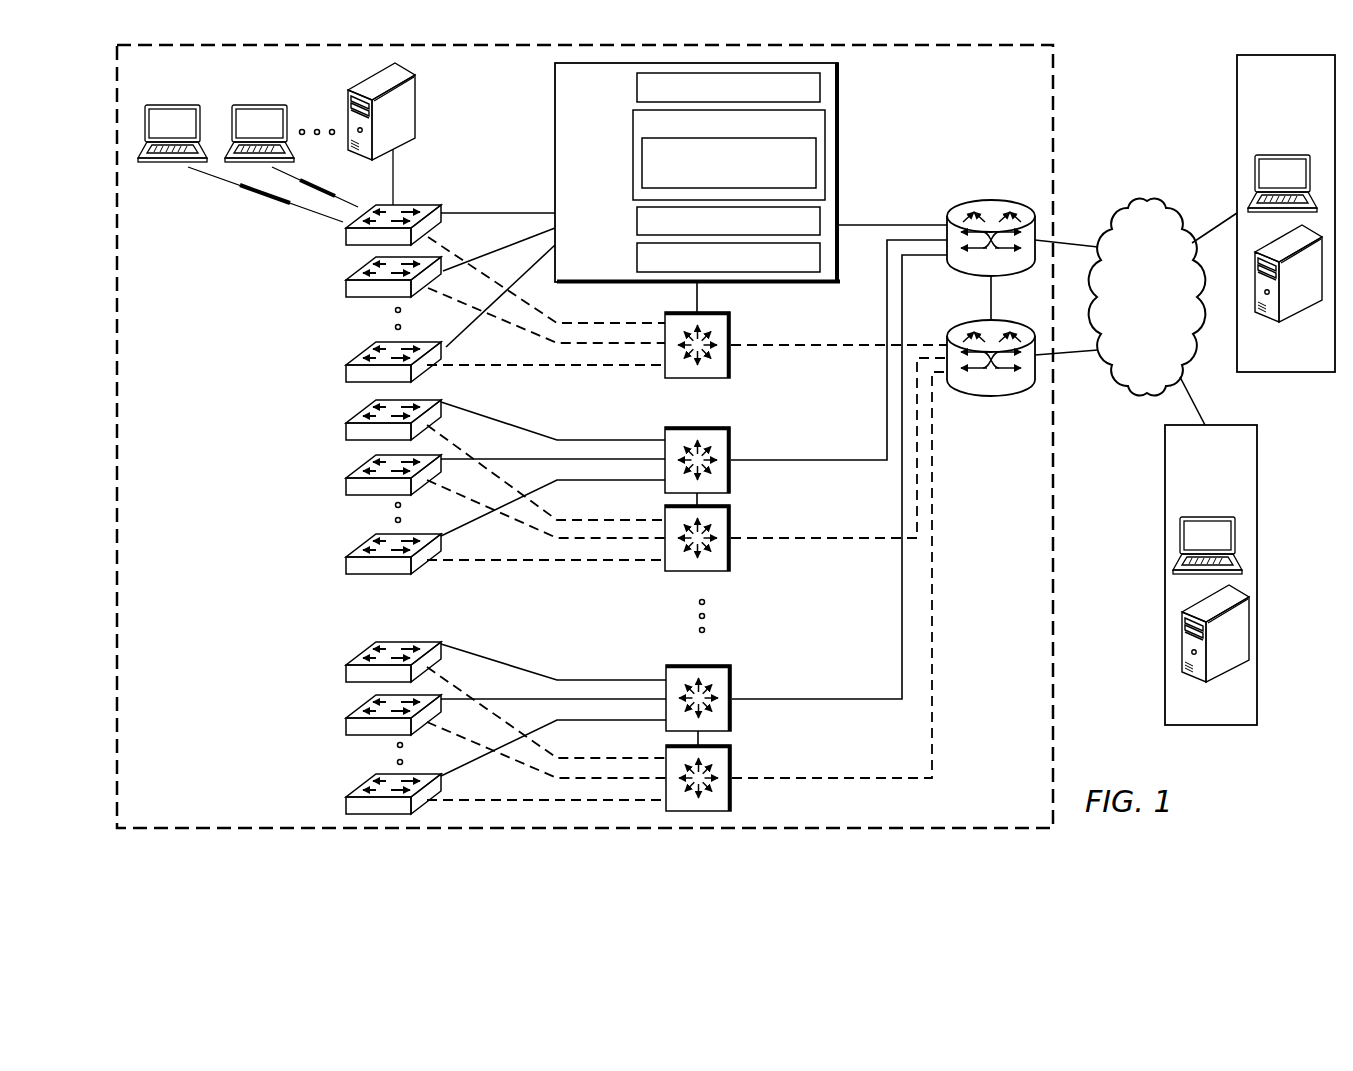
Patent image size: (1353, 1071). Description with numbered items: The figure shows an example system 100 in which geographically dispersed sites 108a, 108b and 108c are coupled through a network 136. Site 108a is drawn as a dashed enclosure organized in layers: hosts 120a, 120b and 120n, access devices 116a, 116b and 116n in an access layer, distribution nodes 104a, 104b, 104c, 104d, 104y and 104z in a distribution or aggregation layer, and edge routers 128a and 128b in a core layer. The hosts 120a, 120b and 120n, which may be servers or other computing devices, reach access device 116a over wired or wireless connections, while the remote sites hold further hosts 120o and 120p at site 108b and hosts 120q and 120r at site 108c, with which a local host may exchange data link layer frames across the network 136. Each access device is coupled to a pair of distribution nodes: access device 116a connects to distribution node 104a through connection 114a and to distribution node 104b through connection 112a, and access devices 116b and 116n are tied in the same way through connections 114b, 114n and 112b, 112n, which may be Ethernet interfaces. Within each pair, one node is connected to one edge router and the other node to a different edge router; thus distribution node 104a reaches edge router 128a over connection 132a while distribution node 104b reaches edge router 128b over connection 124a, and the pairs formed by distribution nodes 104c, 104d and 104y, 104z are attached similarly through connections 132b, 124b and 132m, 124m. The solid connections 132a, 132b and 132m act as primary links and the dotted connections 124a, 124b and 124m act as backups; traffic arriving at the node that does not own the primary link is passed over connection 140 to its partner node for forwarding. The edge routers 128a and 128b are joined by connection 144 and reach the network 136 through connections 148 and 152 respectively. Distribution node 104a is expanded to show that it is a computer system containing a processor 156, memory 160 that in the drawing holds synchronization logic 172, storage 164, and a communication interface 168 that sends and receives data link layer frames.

The system 100 is at (1269, 761).
The distribution node 104a is at (736, 172).
The distribution node 104b is at (732, 332).
The distribution node 104c is at (732, 472).
The distribution node 104d is at (732, 551).
The distribution node 104y is at (733, 711).
The distribution node 104z is at (733, 791).
The site 108a is at (1056, 118).
The site 108b is at (1246, 213).
The site 108c is at (1247, 575).
The connection 112a is at (620, 327).
The connection 112b is at (582, 347).
The connection 112n is at (500, 367).
The connection 114a is at (472, 212).
The connection 114b is at (528, 237).
The connection 114n is at (467, 328).
The access device 116a is at (345, 240).
The access device 116b is at (345, 292).
The access device 116n is at (345, 375).
The host 120a is at (172, 100).
The host 120b is at (259, 100).
The host 120n is at (415, 103).
The host 120o is at (1280, 152).
The host 120p is at (1290, 324).
The host 120q is at (1207, 515).
The host 120r is at (1220, 678).
The connection 124a is at (845, 344).
The connection 124b is at (845, 537).
The connection 124m is at (848, 777).
The edge router 128a is at (993, 200).
The edge router 128b is at (996, 393).
The connection 132a is at (892, 223).
The connection 132b is at (848, 459).
The connection 132m is at (848, 698).
The network 136 is at (1147, 200).
The connection 140 is at (697, 298).
The connection 144 is at (990, 298).
The connection 148 is at (1078, 242).
The connection 152 is at (1076, 352).
The processor 156 is at (637, 90).
The memory 160 is at (630, 129).
The storage 164 is at (637, 224).
The communication interface 168 is at (637, 260).
The synchronization logic 172 is at (642, 165).